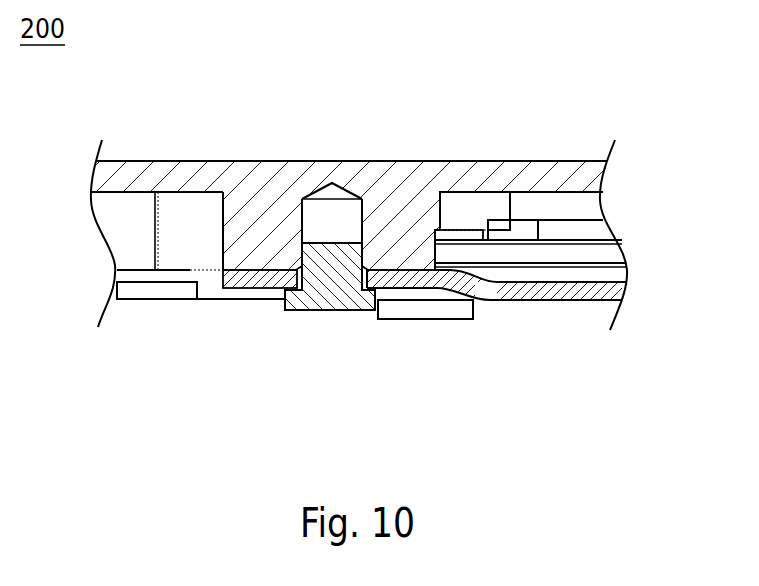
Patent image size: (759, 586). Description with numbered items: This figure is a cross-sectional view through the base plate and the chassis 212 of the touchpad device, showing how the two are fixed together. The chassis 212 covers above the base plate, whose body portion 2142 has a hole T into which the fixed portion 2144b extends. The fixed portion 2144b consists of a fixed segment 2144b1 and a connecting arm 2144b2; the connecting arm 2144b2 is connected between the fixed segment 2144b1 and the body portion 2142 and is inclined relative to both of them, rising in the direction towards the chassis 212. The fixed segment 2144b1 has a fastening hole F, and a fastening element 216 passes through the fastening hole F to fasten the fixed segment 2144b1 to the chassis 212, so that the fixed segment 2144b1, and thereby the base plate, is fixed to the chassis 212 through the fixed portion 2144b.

The chassis 212 is at (487, 170).
The body portion 2142 is at (625, 292).
The fixed portion 2144b is at (495, 371).
The fixed segment 2144b1 is at (408, 276).
The connecting arm 2144b2 is at (481, 291).
The fastening element 216 is at (325, 302).
The hole T is at (215, 294).
The fastening hole F is at (362, 291).